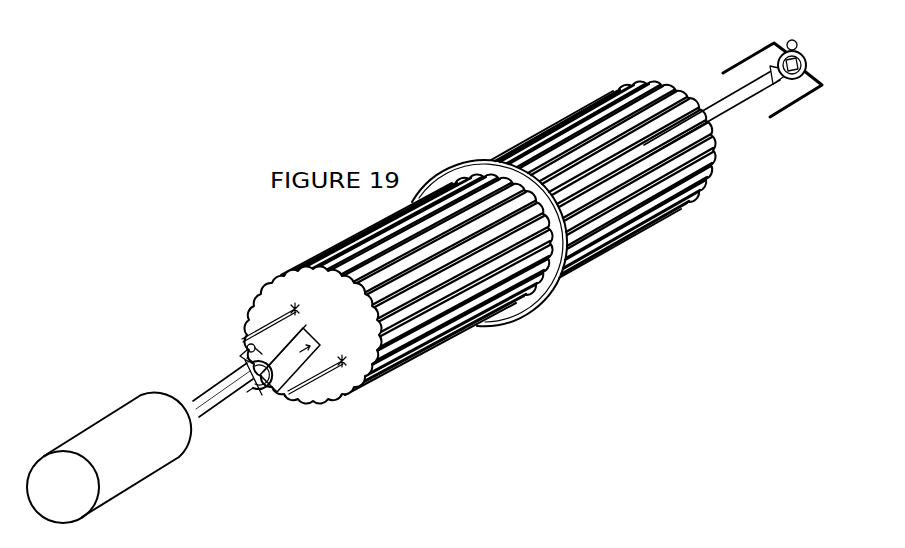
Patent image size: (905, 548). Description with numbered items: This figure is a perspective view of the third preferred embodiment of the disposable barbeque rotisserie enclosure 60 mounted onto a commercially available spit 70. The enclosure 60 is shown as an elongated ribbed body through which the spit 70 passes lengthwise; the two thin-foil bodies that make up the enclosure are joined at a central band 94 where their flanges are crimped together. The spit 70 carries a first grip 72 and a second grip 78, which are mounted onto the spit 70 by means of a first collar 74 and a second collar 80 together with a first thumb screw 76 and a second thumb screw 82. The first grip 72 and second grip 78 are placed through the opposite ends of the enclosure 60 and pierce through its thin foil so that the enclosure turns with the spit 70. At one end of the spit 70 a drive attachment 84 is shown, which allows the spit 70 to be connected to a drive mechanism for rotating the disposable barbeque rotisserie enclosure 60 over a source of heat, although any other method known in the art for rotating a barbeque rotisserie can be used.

The disposable barbeque rotisserie enclosure 60 is at (118, 228).
The spit 70 is at (225, 390).
The first grip 72 is at (747, 56).
The first collar 74 is at (806, 52).
The first thumb screw 76 is at (792, 39).
The second grip 78 is at (303, 402).
The second collar 80 is at (250, 343).
The second thumb screw 82 is at (236, 365).
The drive attachment 84 is at (135, 476).
The divider ring 94 is at (453, 163).